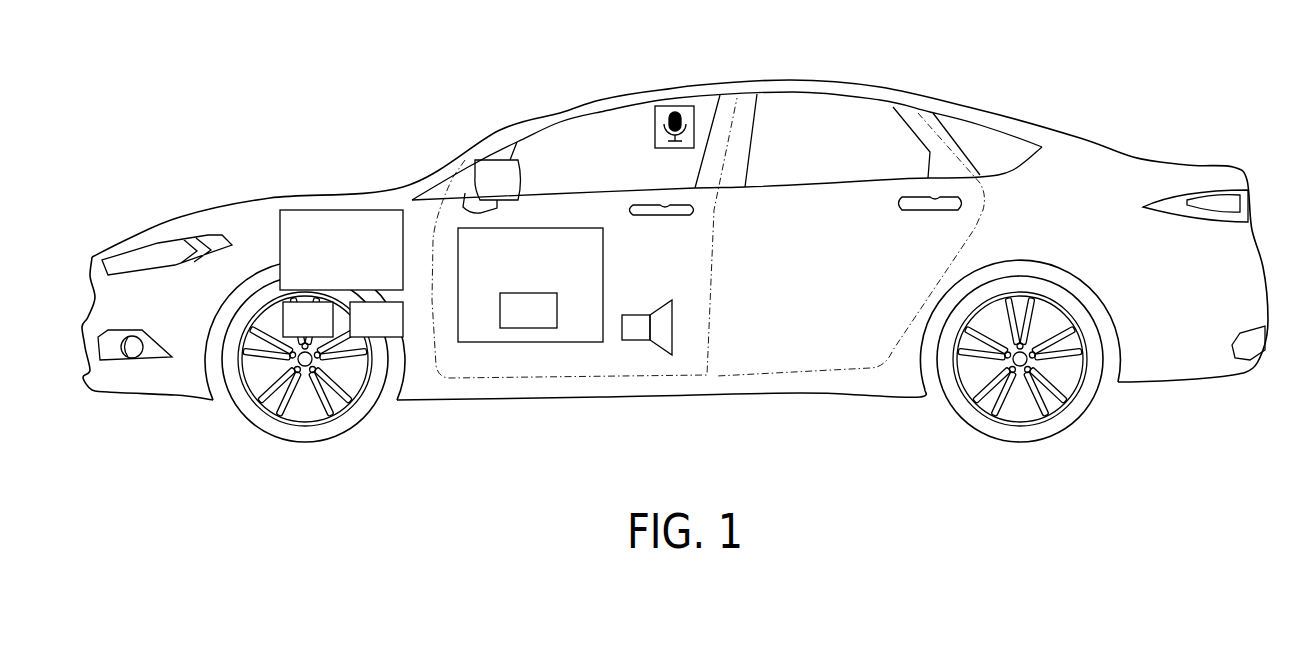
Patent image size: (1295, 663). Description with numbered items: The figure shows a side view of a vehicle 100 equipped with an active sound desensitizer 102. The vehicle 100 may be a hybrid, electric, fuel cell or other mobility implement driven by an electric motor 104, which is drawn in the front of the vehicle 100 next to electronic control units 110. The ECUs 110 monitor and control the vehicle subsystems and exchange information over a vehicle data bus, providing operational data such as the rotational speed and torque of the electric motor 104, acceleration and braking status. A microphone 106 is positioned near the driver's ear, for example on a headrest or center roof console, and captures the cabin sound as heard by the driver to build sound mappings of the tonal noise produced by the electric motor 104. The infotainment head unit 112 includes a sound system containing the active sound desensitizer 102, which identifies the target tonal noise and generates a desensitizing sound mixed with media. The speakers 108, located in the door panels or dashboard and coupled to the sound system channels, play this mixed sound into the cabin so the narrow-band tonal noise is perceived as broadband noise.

The vehicle 100 is at (1190, 164).
The active sound desensitizer 102 is at (510, 325).
The electric motor 104 is at (343, 210).
The microphone 106 is at (678, 106).
The speakers 108 is at (672, 327).
The electronic control units (ECUs) 110 is at (395, 331).
The infotainment head unit 112 is at (603, 265).